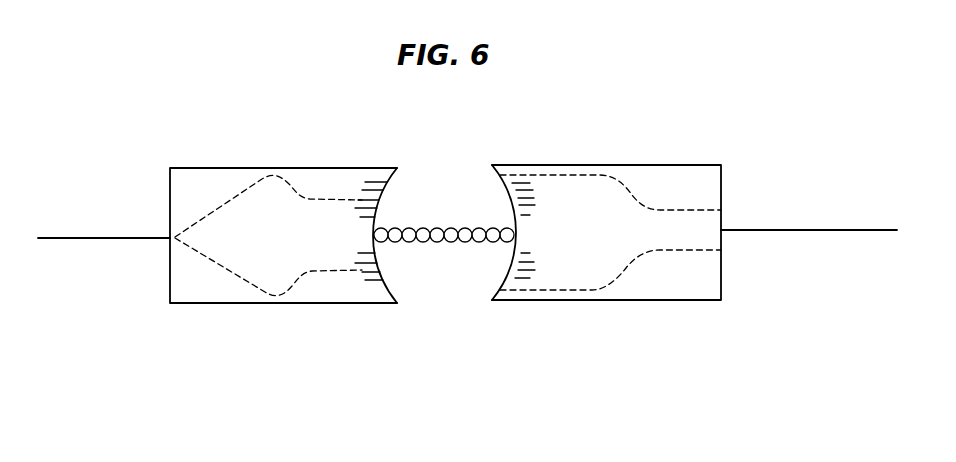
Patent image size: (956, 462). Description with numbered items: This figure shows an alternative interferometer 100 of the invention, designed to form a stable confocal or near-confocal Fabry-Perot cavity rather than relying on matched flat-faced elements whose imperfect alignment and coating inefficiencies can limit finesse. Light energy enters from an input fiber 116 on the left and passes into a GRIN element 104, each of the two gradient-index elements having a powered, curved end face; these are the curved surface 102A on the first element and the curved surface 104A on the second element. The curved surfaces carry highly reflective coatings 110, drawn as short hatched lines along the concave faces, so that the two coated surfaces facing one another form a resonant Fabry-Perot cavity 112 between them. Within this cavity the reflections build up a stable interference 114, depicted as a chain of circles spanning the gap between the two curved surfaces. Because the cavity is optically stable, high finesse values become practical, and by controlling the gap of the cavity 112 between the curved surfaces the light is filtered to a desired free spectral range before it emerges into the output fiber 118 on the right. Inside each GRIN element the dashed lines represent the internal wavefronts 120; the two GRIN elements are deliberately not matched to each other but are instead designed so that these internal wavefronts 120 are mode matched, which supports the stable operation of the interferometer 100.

The interferometer 100 is at (226, 396).
The curved surface 102A is at (391, 290).
The GRIN element 104 is at (218, 202).
The curved surface 104A is at (497, 285).
The highly reflective coatings 110 is at (349, 262).
The Fabry-Perot cavity 112 is at (434, 284).
The stable interference 114 is at (445, 228).
The input fiber 116 is at (130, 238).
The output fiber 118 is at (834, 230).
The internal wavefronts 120 is at (232, 273).